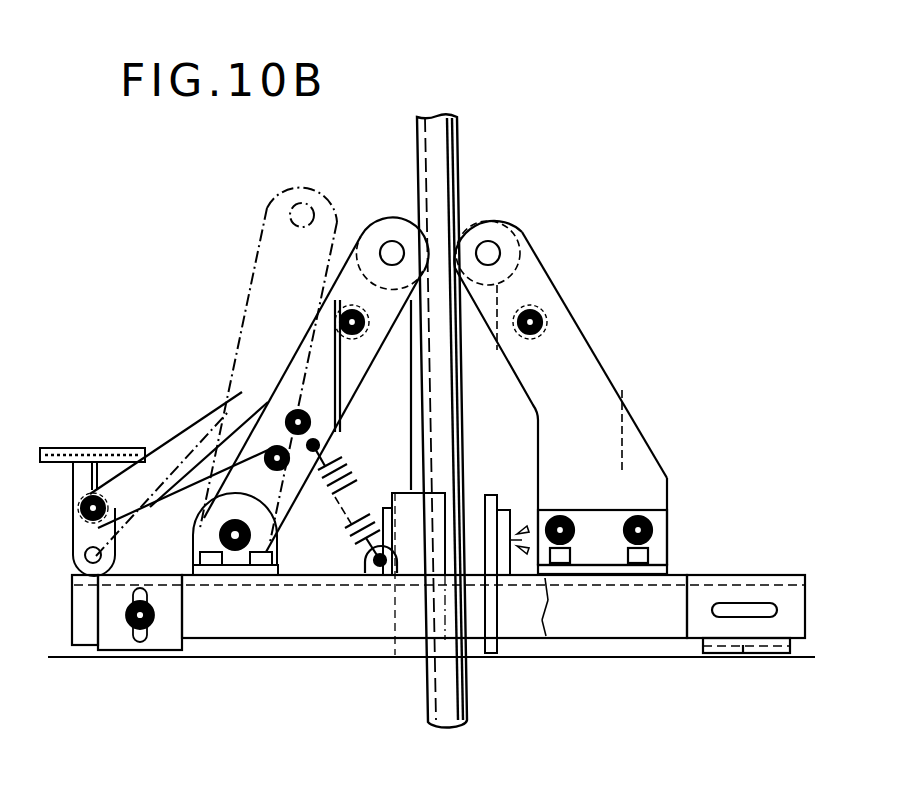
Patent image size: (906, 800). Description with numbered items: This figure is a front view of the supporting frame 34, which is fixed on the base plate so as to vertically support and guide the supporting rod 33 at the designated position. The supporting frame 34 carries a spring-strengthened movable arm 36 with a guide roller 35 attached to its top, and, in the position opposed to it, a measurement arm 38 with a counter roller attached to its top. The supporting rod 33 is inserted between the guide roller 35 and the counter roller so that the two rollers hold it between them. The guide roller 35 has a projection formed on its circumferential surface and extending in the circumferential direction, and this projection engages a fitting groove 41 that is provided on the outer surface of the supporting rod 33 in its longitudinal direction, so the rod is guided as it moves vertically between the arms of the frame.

The supporting rod 33 is at (440, 194).
The supporting frame 34 is at (210, 258).
The guide roller 35 is at (393, 272).
The movable arm 36 is at (323, 378).
The measurement arm 38 is at (577, 417).
The fitting groove 41 is at (417, 160).